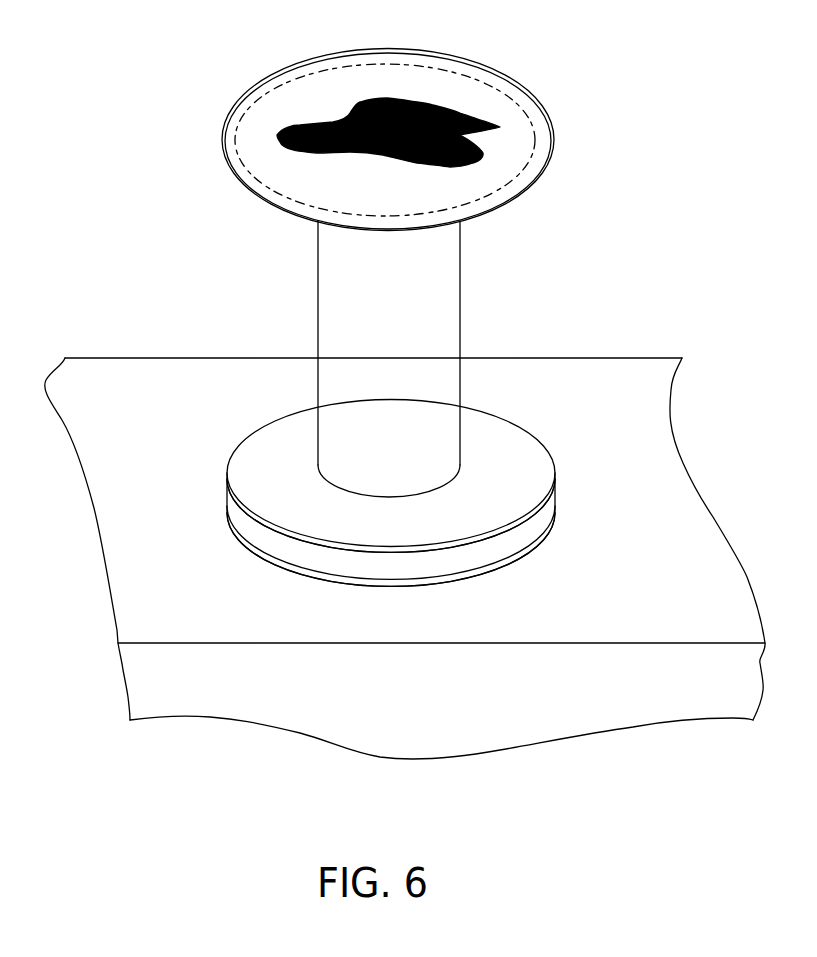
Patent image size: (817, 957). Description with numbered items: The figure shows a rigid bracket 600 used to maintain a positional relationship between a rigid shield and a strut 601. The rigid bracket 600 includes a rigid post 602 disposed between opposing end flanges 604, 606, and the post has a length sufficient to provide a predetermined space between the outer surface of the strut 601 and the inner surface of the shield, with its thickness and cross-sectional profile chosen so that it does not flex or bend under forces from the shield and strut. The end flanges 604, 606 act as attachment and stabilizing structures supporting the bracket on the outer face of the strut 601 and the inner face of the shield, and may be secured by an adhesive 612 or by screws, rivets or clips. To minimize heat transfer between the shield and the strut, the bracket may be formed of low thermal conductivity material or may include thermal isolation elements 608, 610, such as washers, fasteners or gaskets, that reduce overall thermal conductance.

The rigid bracket 600 is at (158, 100).
The strut 601 is at (162, 388).
The rigid post 602 is at (420, 346).
The end flange 604 is at (313, 512).
The end flange 606 is at (530, 122).
The thermal isolation element 608 is at (240, 530).
The thermal isolation element 610 is at (227, 158).
The adhesive 612 is at (445, 105).